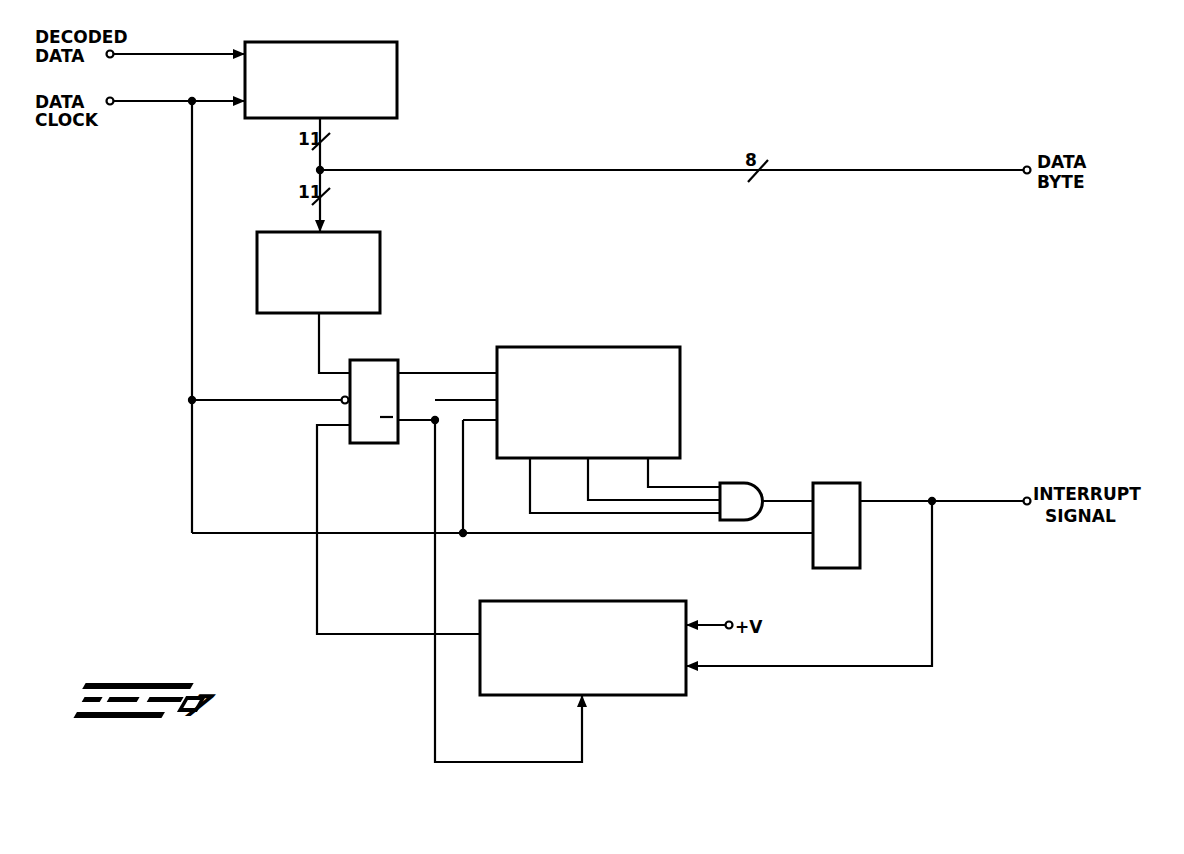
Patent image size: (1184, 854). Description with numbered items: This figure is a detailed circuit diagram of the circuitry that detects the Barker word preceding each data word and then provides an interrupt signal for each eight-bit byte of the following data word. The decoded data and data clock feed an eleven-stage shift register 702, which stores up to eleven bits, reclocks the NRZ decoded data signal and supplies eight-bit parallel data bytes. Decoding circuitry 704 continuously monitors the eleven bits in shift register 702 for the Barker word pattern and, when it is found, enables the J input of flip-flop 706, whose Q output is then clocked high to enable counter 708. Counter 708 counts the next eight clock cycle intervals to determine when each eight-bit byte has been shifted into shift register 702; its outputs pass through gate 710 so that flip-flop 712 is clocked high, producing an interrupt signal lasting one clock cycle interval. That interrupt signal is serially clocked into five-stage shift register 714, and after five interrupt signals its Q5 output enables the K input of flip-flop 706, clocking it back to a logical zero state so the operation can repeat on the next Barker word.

The shift register 702 is at (378, 48).
The decoding circuitry 704 is at (368, 235).
The flip-flop 706 is at (392, 365).
The counter 708 is at (621, 358).
The AND gate 710 is at (738, 489).
The flip-flop 712 is at (852, 490).
The five-stage shift register 714 is at (614, 603).